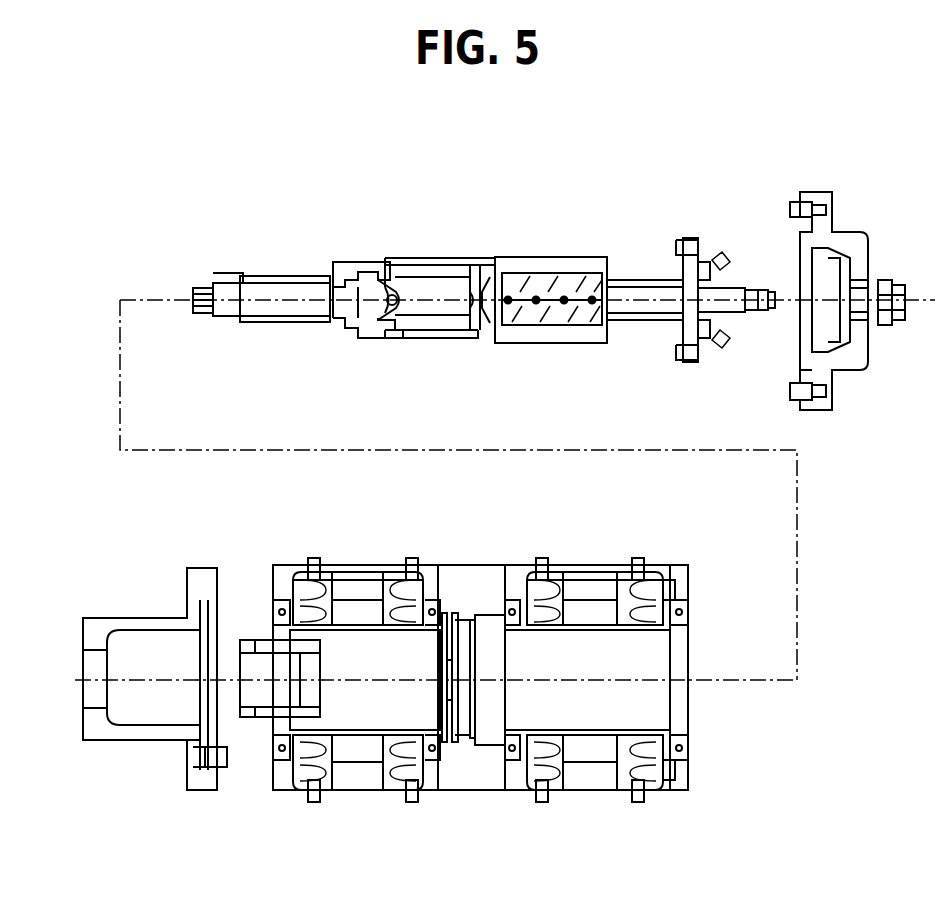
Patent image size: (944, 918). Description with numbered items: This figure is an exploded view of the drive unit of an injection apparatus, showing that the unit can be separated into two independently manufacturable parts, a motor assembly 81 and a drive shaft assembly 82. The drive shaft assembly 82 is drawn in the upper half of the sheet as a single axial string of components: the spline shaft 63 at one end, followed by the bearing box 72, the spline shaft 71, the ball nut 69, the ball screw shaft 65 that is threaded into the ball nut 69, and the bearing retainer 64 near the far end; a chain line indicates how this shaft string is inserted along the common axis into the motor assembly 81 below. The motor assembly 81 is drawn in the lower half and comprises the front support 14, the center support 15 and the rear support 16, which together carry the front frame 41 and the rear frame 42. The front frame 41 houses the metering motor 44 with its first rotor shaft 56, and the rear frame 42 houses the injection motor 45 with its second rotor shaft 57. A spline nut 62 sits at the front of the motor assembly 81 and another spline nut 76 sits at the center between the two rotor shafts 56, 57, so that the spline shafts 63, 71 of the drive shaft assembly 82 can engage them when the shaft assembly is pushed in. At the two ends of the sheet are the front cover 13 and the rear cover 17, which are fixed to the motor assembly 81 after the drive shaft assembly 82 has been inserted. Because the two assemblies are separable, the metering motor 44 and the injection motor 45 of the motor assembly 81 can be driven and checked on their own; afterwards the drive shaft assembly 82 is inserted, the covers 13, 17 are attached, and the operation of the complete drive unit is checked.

The front cover 13 is at (100, 742).
The front support 14 is at (288, 792).
The center support 15 is at (455, 792).
The rear support 16 is at (670, 792).
The rear cover 17 is at (866, 240).
The front frame 41 is at (370, 792).
The rear frame 42 is at (586, 792).
The metering motor 44 is at (398, 580).
The injection motor 45 is at (623, 580).
The first rotor shaft 56 is at (390, 627).
The second rotor shaft 57 is at (640, 625).
The spline nut 62 is at (268, 746).
The spline shaft 63 is at (283, 275).
The bearing retainer 64 is at (680, 336).
The ball screw shaft 65 is at (645, 278).
The ball nut 69 is at (538, 257).
The spline shaft 71 is at (428, 340).
The bearing box 72 is at (360, 262).
The spline nut 76 is at (465, 644).
The motor assembly 81 is at (500, 800).
The drive shaft assembly 82 is at (421, 230).